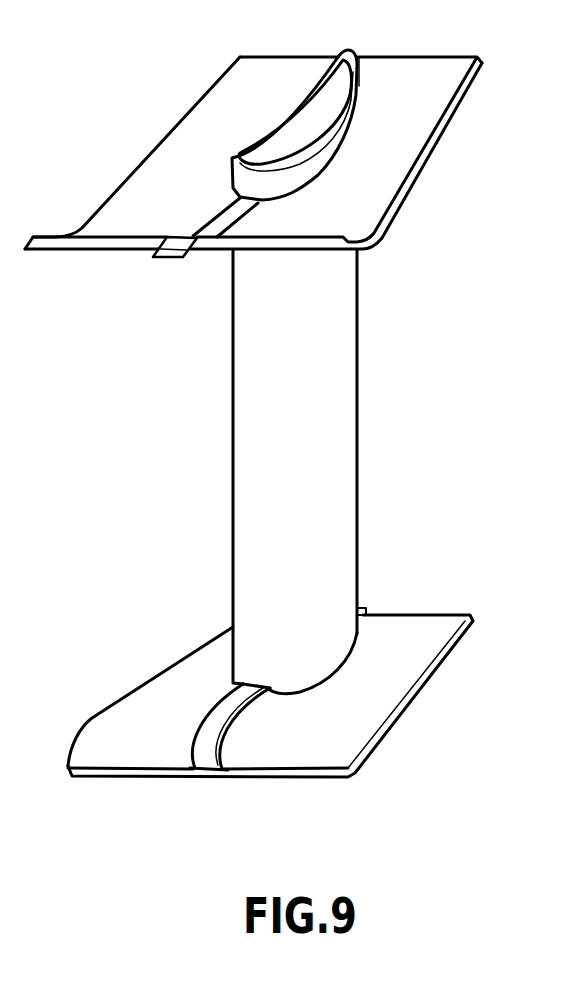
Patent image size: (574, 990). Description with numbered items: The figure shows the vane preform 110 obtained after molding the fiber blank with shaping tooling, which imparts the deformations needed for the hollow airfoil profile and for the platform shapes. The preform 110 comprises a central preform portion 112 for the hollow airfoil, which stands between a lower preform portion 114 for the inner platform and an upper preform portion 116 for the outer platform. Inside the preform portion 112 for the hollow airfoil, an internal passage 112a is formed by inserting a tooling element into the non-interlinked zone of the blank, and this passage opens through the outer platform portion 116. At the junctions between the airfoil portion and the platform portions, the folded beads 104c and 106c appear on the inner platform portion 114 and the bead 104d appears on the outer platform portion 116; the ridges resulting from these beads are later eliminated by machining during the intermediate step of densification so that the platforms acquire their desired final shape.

The preform portion for the outer platform 116 is at (180, 144).
The internal passage 112a is at (265, 155).
The bead 104d is at (172, 255).
The preform 110 is at (217, 427).
The preform portion for the hollow airfoil 112 is at (320, 415).
The bead 106c is at (362, 610).
The bead 104c is at (235, 698).
The preform portion for the inner platform 114 is at (170, 699).